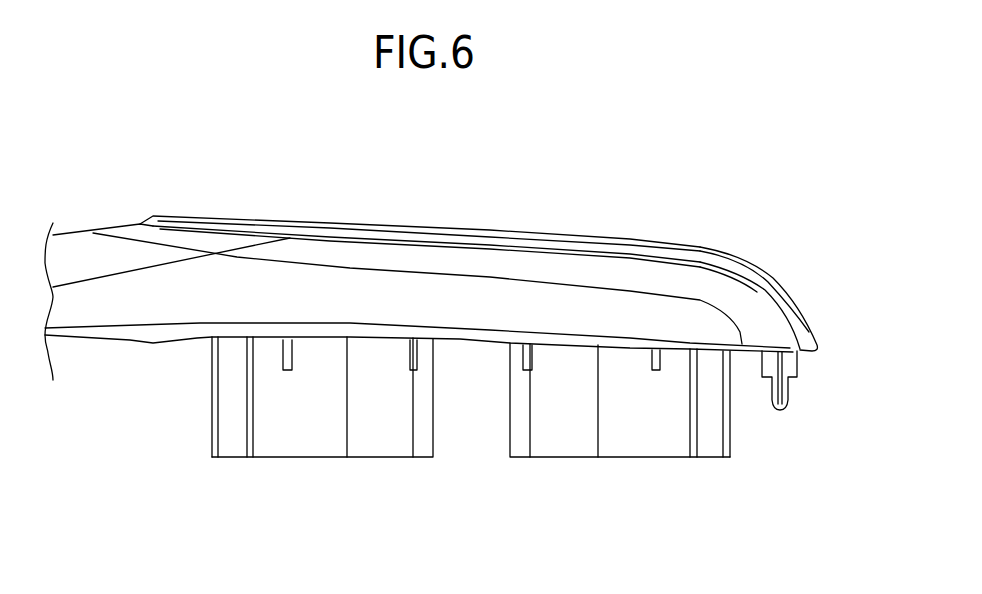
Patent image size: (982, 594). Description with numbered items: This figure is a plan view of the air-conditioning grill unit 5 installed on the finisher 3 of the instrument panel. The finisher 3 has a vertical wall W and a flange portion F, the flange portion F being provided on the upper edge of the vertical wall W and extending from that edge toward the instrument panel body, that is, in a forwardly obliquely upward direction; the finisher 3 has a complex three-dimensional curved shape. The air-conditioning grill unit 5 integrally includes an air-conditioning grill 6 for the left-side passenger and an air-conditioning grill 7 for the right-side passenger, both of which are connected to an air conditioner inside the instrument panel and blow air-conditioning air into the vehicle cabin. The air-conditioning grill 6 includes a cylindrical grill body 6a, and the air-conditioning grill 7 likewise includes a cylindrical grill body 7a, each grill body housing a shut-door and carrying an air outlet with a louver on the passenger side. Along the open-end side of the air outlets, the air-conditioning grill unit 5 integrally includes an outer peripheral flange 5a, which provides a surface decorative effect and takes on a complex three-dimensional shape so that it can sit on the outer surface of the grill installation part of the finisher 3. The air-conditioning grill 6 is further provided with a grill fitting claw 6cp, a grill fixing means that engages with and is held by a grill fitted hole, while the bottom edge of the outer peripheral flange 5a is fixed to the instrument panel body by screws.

The finisher 3 is at (237, 134).
The vertical wall W is at (93, 230).
The flange portion F is at (215, 300).
The air-conditioning grill unit 5 is at (536, 231).
The outer peripheral flange 5a is at (810, 317).
The air-conditioning grill 6 is at (626, 470).
The grill body 6a is at (732, 427).
The grill fitting claw 6cp is at (790, 387).
The air-conditioning grill 7 is at (309, 468).
The grill body 7a is at (210, 423).